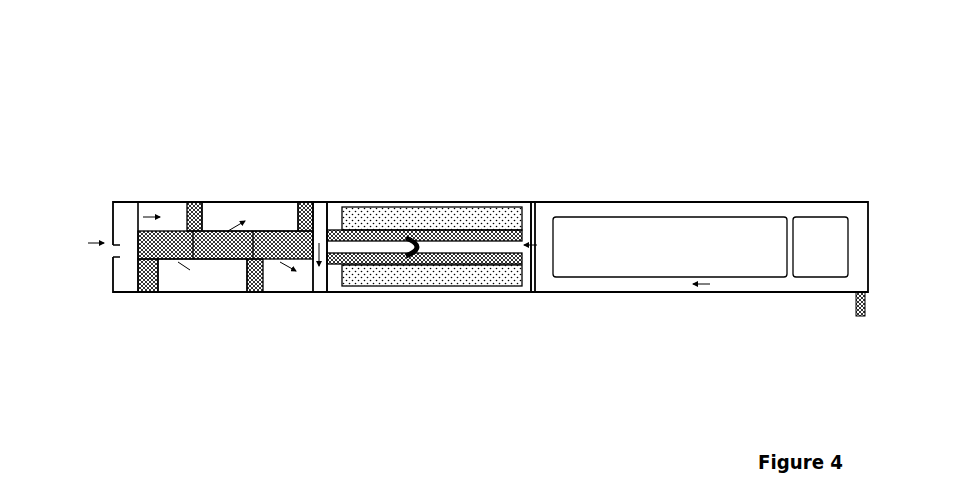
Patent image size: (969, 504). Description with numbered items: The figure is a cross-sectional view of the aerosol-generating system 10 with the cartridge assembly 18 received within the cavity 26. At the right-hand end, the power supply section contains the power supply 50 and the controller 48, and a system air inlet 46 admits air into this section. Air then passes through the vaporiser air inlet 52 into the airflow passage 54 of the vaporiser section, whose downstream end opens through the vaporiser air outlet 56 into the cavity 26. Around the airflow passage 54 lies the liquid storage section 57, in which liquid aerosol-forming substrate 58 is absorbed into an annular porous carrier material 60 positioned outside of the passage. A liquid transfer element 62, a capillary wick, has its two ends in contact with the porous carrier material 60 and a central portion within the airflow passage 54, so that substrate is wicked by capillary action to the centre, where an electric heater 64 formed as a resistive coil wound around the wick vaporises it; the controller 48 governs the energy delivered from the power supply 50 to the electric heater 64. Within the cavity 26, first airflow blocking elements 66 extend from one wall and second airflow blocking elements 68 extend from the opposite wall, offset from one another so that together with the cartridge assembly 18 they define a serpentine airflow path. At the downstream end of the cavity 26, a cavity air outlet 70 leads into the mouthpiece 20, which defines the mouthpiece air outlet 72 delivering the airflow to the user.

The aerosol-generating system 10 is at (740, 170).
The mouthpiece 20 is at (117, 272).
The mouthpiece air outlet 72 is at (118, 242).
The cavity air outlet 70 is at (142, 215).
The first airflow blocking elements 66 is at (197, 215).
The cavity 26 is at (240, 215).
The cartridge assembly 18 is at (222, 258).
The second airflow blocking elements 68 is at (152, 290).
The vaporiser air outlet 56 is at (328, 247).
The annular porous carrier material 60 is at (408, 212).
The liquid storage section 57 is at (459, 205).
The liquid aerosol-forming substrate 58 is at (495, 216).
The airflow passage 54 is at (503, 250).
The electric heater 64 is at (418, 247).
The liquid transfer element 62 is at (446, 268).
The vaporiser air inlet 52 is at (538, 245).
The power supply 50 is at (670, 250).
The controller 48 is at (820, 247).
The system air inlet 46 is at (857, 293).